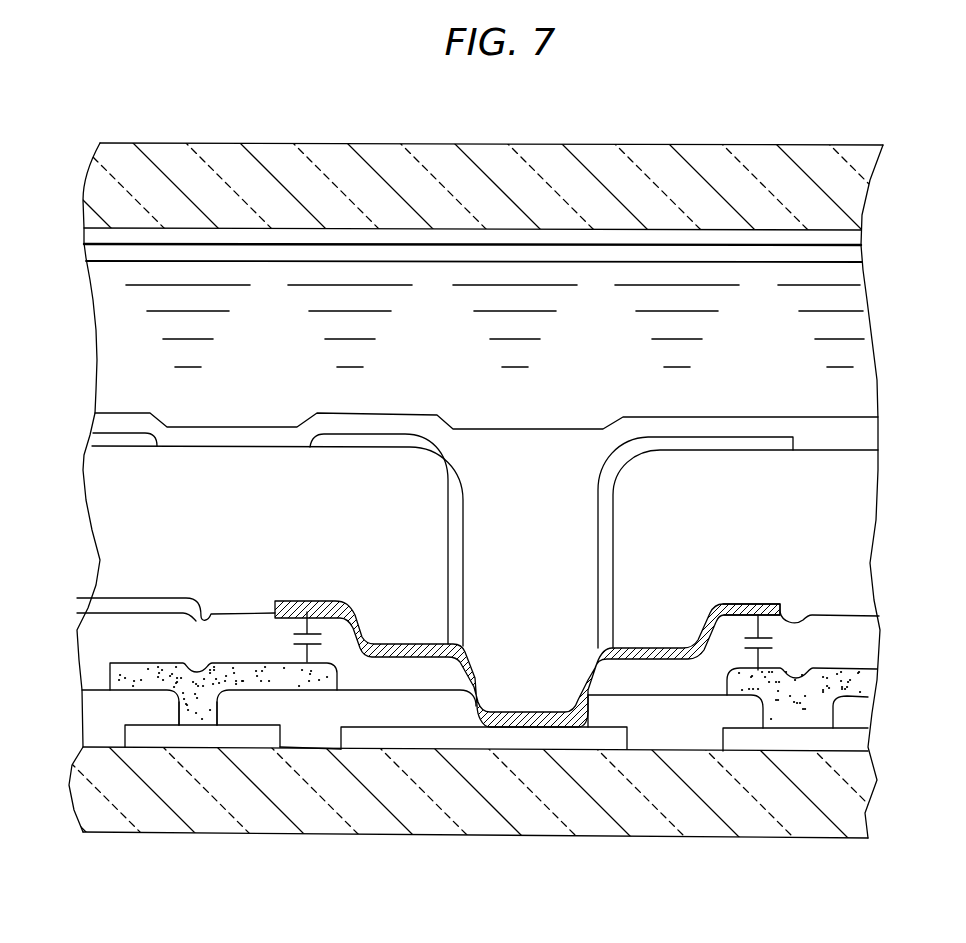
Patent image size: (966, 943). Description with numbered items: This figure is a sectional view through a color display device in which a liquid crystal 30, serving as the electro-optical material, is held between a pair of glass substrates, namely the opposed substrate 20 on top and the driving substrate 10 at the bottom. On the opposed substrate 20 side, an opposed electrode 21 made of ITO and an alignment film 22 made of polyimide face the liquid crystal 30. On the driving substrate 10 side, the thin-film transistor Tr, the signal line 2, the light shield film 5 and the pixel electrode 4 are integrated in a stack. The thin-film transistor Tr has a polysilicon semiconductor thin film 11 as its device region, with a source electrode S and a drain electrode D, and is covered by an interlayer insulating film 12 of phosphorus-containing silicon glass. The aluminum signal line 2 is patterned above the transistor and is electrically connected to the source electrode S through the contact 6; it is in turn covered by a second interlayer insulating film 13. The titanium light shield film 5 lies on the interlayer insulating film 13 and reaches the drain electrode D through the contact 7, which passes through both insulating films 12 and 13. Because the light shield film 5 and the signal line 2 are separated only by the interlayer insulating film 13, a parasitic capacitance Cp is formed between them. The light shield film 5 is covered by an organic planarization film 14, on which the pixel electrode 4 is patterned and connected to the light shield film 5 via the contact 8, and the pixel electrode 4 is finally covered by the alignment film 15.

The opposed substrate 20 is at (850, 200).
The opposed electrode 21 is at (848, 241).
The alignment film 22 is at (848, 258).
The liquid crystal 30 is at (845, 330).
The pixel electrode 4 is at (767, 445).
The alignment film 15 is at (847, 440).
The planarization film 14 is at (848, 518).
The light shield film 5 is at (785, 612).
The interlayer insulating film 13 is at (848, 642).
The contact 8 is at (620, 632).
The parasitic capacitance Cp is at (531, 641).
The signal line 2 is at (234, 660).
The interlayer insulating film 12 is at (848, 718).
The semiconductor thin film 11 is at (848, 743).
The contact 6 is at (165, 703).
The contact 7 is at (594, 721).
The source electrode S is at (202, 769).
The drain electrode D is at (535, 771).
The thin-film transistor Tr is at (312, 752).
The driving substrate 10 is at (848, 808).